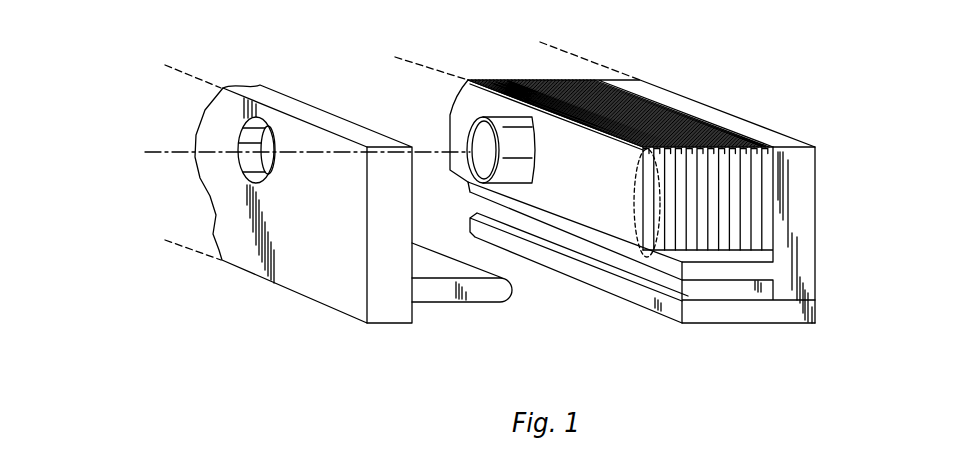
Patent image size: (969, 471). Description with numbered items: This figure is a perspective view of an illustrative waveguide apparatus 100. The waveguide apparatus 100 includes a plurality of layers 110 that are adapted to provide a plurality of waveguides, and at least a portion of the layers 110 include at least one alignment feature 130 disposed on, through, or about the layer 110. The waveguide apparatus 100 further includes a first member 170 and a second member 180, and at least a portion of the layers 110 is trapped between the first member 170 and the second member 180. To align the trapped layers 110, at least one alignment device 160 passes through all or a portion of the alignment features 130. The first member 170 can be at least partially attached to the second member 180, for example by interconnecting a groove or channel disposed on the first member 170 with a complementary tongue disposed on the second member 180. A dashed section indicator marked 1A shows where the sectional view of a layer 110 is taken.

The waveguide apparatus 100 is at (703, 55).
The layer 110 is at (767, 182).
The alignment feature 130 is at (530, 170).
The alignment device 160 is at (451, 114).
The first member 170 is at (760, 124).
The second member 180 is at (288, 290).
The section indicator 1A is at (635, 217).